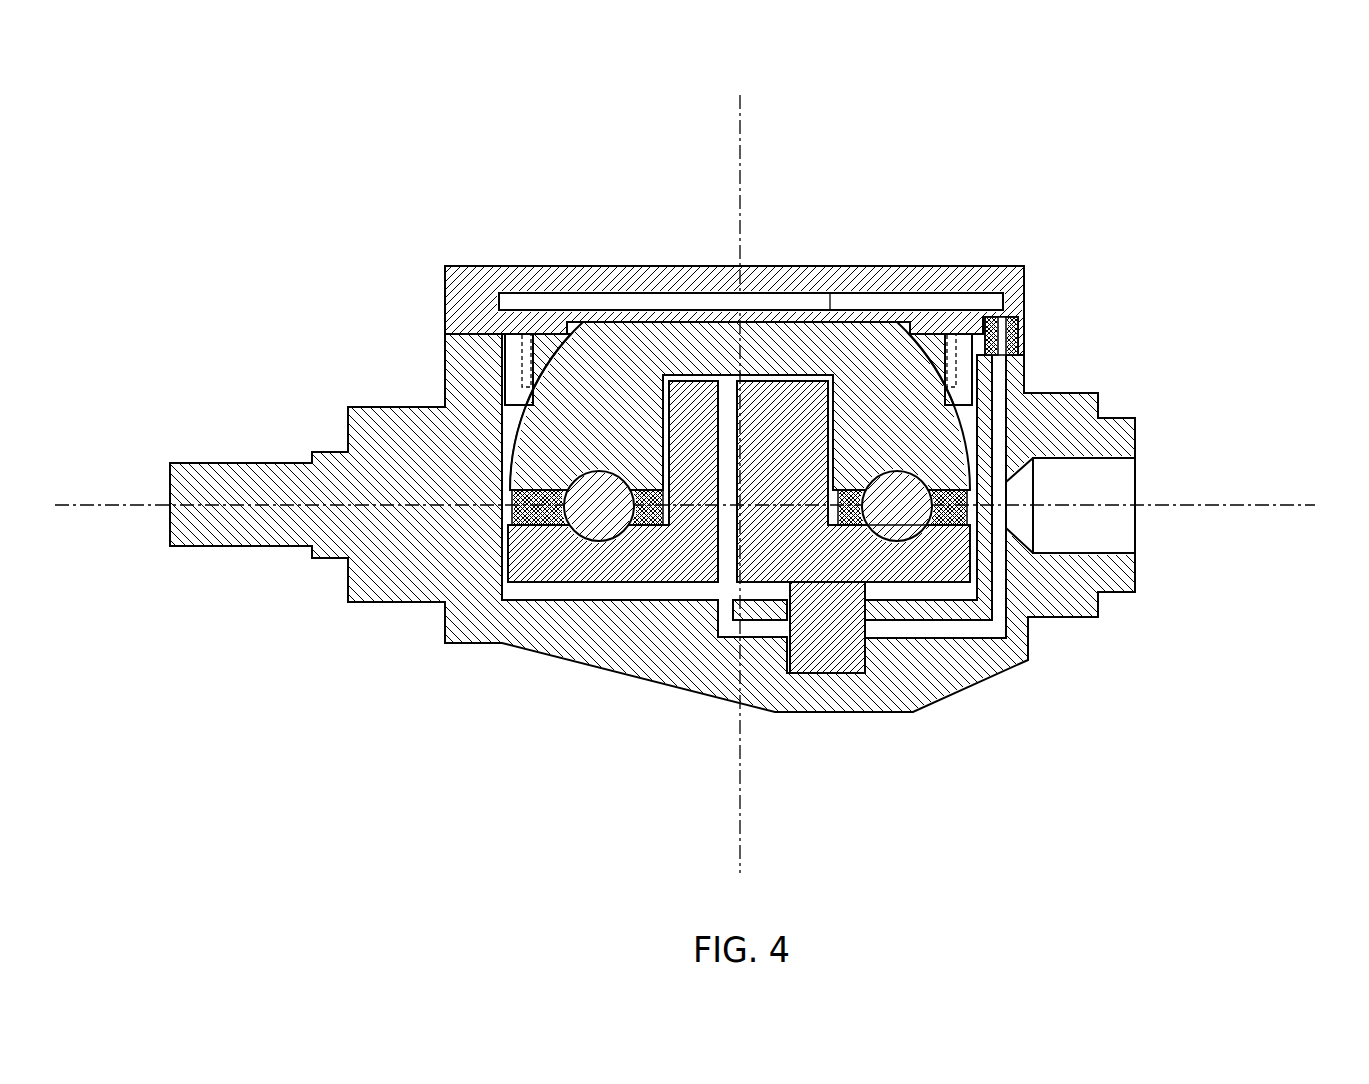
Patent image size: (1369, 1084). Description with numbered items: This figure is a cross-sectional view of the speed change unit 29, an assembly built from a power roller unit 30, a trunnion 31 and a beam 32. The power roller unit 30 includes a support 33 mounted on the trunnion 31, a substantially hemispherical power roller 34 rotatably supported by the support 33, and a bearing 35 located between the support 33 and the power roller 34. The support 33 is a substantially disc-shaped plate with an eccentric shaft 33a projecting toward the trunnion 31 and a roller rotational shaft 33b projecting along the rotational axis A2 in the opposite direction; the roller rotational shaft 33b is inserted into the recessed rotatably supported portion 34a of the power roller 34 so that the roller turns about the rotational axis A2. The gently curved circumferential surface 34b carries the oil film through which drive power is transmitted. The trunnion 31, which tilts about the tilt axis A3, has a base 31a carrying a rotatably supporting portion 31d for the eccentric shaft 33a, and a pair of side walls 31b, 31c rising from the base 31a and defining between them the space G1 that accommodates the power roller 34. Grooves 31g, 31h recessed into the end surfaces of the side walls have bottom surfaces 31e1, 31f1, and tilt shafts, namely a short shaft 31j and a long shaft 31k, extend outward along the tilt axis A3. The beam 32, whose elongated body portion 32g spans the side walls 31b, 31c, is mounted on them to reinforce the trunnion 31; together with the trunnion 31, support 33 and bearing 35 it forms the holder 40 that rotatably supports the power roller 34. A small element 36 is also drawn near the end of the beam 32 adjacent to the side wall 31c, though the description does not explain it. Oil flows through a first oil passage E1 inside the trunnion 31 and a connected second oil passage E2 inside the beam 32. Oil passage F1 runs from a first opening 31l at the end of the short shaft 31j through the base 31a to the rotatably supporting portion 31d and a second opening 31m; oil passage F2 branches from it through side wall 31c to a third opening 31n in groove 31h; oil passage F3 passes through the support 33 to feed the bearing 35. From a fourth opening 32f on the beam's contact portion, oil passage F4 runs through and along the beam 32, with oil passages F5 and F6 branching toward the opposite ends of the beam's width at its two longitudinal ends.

The speed change unit 29 is at (378, 183).
The power roller unit 30 is at (573, 330).
The trunnion 31 is at (490, 650).
The base 31a is at (690, 600).
The side wall 31b is at (444, 397).
The side wall 31c is at (1025, 386).
The rotatably supporting portion 31d is at (760, 640).
The bottom surface 31e1 is at (442, 343).
The bottom surface 31f1 is at (1027, 343).
The groove 31g is at (443, 325).
The groove 31h is at (1025, 358).
The short shaft 31j is at (1105, 605).
The long shaft 31k is at (240, 552).
The first opening 31l is at (1135, 462).
The second opening 31m is at (705, 612).
The third opening 31n is at (1025, 372).
The beam 32 is at (463, 262).
The fourth opening 32f is at (980, 320).
The body portion 32g is at (700, 266).
The support 33 is at (600, 560).
The eccentric shaft 33a is at (838, 585).
The roller rotational shaft 33b is at (790, 380).
The power roller 34 is at (862, 385).
The rotatably supported portion 34a is at (660, 430).
The circumferential surface 34b is at (520, 447).
The bearing 35 is at (905, 535).
The fastening member 36 is at (1013, 317).
The holder 40 is at (383, 668).
The rotational axis A2 is at (743, 469).
The tilt axis A3 is at (701, 502).
The first oil passage E1 is at (1030, 640).
The second oil passage E2 is at (830, 290).
The oil passage F1 is at (995, 648).
The oil passage F2 is at (1026, 394).
The oil passage F3 is at (660, 600).
The oil passage F4 is at (1002, 312).
The oil passage F5 is at (442, 345).
The oil passage F6 is at (1005, 428).
The space G1 is at (512, 432).